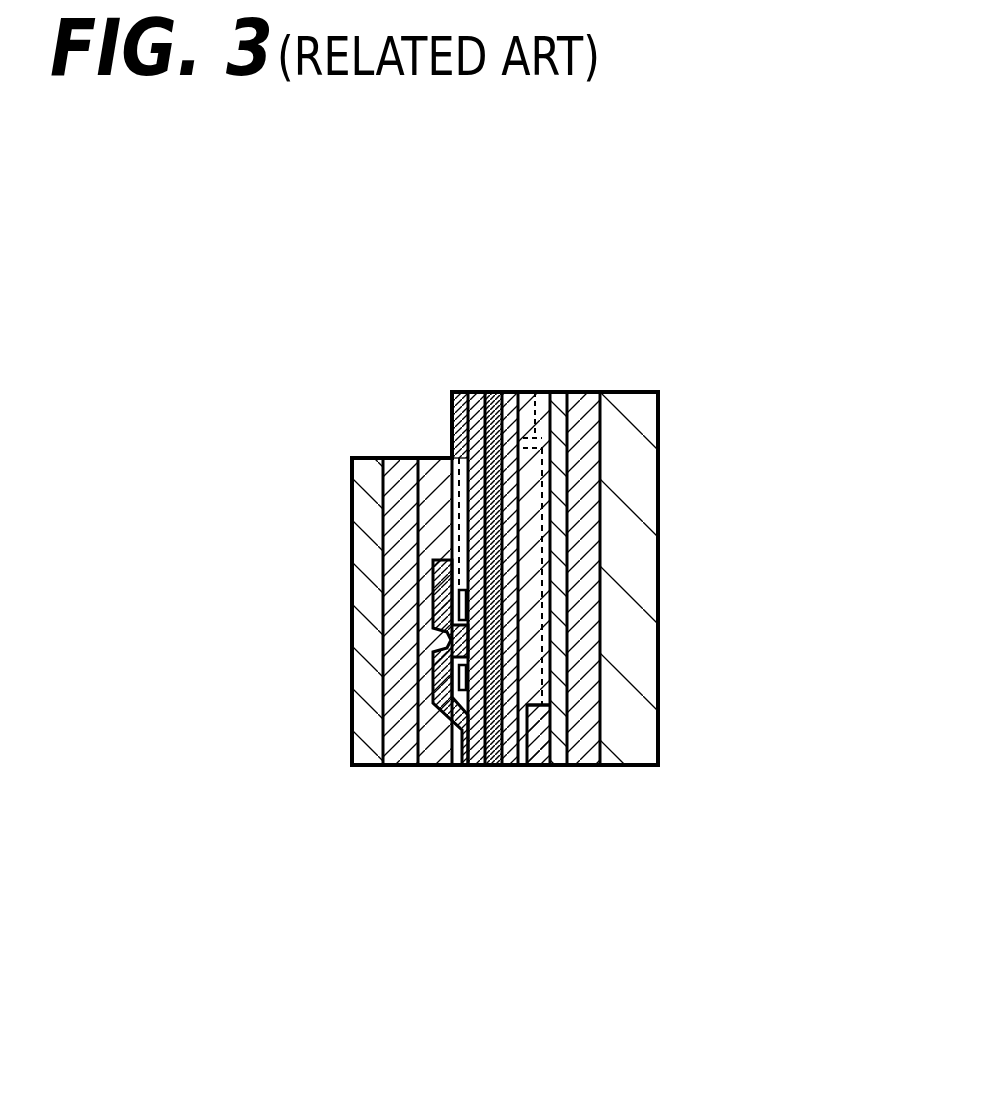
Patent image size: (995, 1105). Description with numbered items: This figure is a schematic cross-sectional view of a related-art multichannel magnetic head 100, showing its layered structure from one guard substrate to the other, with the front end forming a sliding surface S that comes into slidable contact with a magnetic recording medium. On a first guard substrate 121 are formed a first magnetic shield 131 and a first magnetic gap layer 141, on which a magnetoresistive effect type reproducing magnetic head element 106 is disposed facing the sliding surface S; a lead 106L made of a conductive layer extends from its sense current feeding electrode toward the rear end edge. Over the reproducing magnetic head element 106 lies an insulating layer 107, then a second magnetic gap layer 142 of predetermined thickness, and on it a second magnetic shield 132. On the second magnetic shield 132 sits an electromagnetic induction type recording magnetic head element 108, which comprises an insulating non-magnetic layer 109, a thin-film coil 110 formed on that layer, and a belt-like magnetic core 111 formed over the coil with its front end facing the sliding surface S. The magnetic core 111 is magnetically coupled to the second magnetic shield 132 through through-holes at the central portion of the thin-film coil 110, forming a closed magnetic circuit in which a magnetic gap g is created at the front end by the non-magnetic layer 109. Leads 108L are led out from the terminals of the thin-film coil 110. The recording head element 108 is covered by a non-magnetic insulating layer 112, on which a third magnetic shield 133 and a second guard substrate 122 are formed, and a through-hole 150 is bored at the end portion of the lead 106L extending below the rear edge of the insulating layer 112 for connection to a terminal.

The multichannel magnetic head 100 is at (746, 217).
The first guard substrate 121 is at (633, 408).
The first magnetic shield 131 is at (600, 453).
The second magnetic shield 132 is at (503, 490).
The first magnetic gap layer 141 is at (558, 525).
The second magnetic gap layer 142 is at (520, 572).
The leads 106L is at (545, 615).
The insulating non-magnetic layer 109 is at (503, 667).
The insulating layer 107 is at (543, 712).
The magnetoresistive effect type reproducing magnetic head element 106 is at (542, 767).
The sliding surface S is at (558, 764).
The magnetic gap g is at (483, 767).
The magnetic core 111 is at (472, 765).
The electromagnetic induction type recording magnetic head element 108 is at (437, 707).
The thin-film coil 110 is at (462, 676).
The leads 108L is at (457, 521).
The second guard substrate 122 is at (367, 472).
The third magnetic shield 133 is at (398, 478).
The non-magnetic insulating layer 112 is at (433, 470).
The through-hole 150 is at (535, 392).